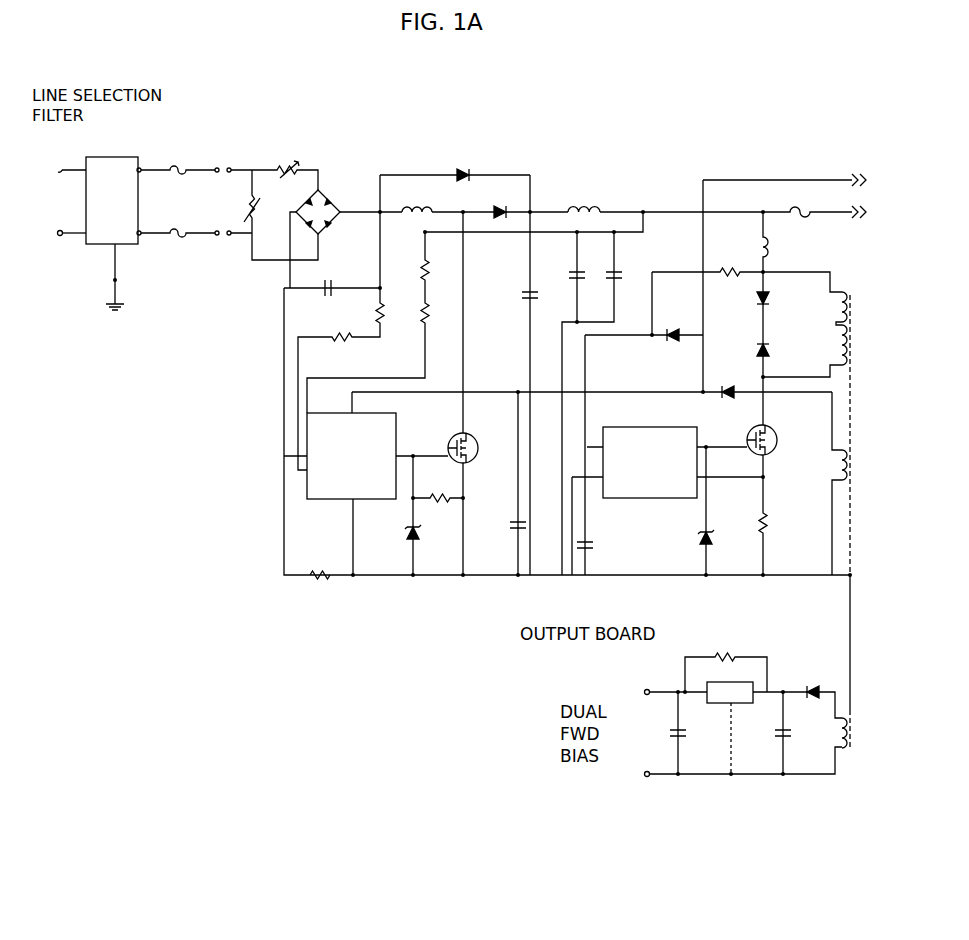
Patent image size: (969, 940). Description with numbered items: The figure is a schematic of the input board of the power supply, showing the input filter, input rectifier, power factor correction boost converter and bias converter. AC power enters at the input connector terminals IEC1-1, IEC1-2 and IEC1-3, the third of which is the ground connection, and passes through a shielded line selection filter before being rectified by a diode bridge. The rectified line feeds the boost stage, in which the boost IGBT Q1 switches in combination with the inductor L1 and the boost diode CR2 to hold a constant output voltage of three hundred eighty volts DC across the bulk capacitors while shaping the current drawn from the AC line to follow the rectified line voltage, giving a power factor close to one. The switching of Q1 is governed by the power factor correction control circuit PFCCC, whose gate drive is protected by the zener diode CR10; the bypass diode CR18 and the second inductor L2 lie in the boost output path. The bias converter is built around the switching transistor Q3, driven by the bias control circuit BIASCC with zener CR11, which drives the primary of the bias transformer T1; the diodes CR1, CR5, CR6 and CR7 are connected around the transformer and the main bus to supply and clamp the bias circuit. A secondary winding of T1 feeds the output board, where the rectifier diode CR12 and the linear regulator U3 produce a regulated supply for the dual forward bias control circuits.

The IEC input terminal 1 IEC1-1 is at (54, 153).
The IEC input terminal 2 IEC1-2 is at (54, 212).
The IEC input terminal 3 (ground) IEC1-3 is at (73, 277).
The inductor L1 is at (417, 196).
The inductor L2 is at (584, 194).
The diode CR18 is at (455, 164).
The diode CR2 is at (509, 202).
The diode CR1 is at (644, 324).
The diode CR5 is at (788, 300).
The diode CR6 is at (788, 353).
The diode CR7 is at (592, 403).
The zener diode CR10 is at (388, 536).
The zener diode CR11 is at (681, 542).
The diode CR12 is at (818, 682).
The bias transformer T1 is at (813, 422).
The boost IGBT Q1 is at (482, 448).
The bias converter switch Q3 is at (777, 440).
The power factor correction control circuit PFCCC is at (351, 456).
The bias control circuit BIASCC is at (650, 462).
The regulator U3 is at (730, 717).